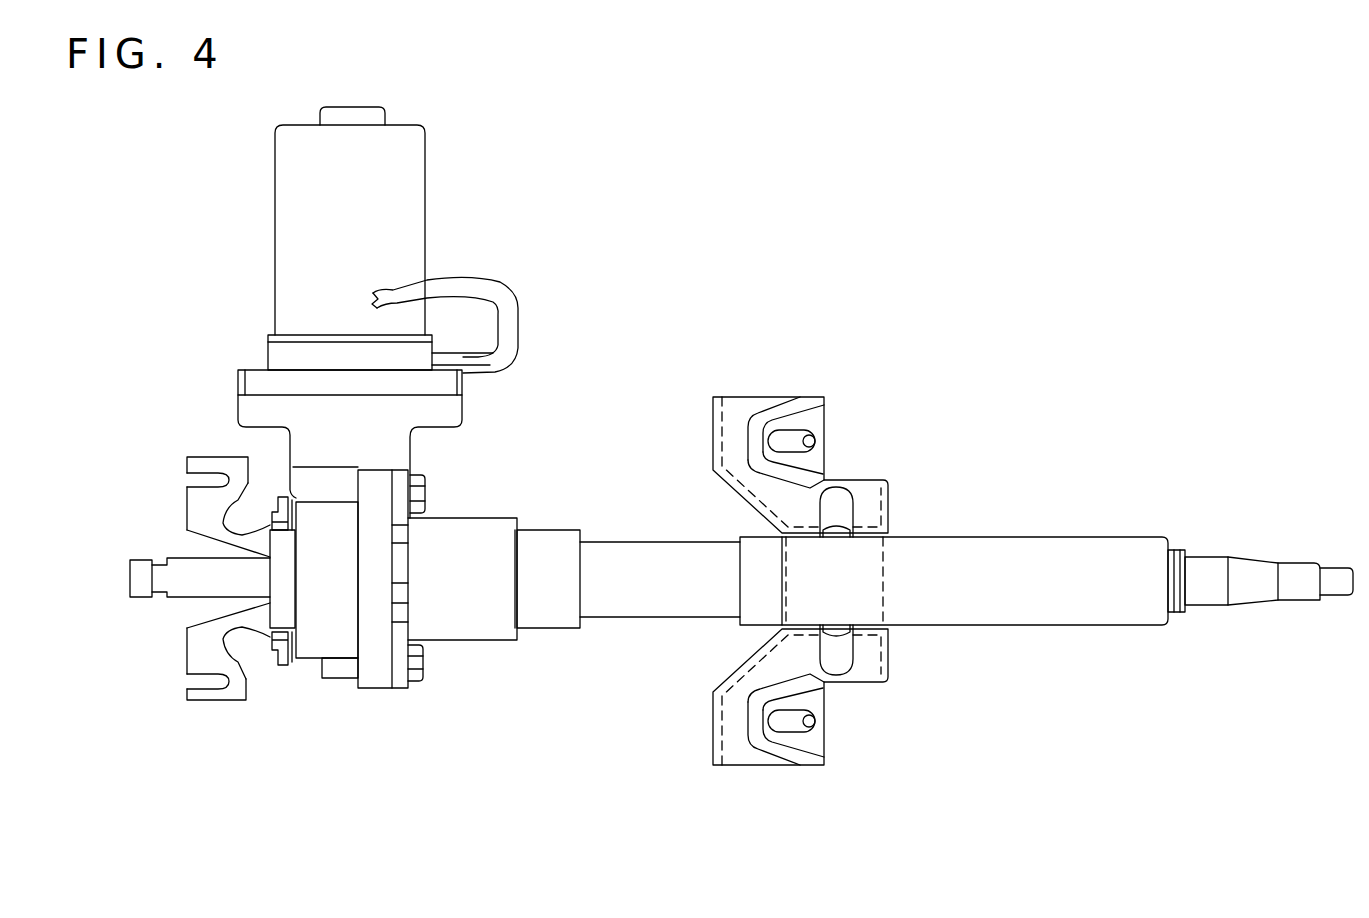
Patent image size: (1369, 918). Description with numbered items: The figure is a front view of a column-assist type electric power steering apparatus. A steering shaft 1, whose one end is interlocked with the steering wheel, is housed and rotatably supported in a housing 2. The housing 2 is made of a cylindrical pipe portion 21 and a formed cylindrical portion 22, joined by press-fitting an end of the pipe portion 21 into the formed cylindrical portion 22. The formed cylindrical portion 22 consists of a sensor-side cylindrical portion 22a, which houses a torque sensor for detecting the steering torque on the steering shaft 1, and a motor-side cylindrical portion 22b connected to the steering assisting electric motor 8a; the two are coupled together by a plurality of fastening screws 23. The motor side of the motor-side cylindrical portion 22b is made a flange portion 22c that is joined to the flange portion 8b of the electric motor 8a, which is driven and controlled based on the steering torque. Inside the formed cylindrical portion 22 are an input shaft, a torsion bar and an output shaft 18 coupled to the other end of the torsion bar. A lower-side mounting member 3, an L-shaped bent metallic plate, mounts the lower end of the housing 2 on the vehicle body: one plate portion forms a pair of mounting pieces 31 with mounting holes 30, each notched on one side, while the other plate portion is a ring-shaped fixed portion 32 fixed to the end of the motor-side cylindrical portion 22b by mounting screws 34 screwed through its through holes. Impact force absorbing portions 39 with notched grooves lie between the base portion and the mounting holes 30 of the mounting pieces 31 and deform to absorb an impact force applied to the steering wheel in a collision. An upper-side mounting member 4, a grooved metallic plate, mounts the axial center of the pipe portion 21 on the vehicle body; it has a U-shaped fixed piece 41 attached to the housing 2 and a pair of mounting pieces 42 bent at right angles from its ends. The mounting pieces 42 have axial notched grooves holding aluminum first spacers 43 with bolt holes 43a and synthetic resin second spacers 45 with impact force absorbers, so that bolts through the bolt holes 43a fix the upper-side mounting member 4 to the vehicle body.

The steering shaft 1 is at (1210, 598).
The housing 2 is at (641, 538).
The lower-side mounting member 3 is at (183, 579).
The upper-side mounting member 4 is at (788, 576).
The steering assisting electric motor 8a is at (415, 232).
The flange portion of the electric motor 8b is at (257, 373).
The output shaft 18 is at (140, 578).
The cylindrical pipe portion 21 is at (1103, 537).
The formed cylindrical portion 22 is at (490, 517).
The sensor-side cylindrical portion 22a is at (498, 630).
The motor-side cylindrical portion 22b is at (345, 610).
The flange portion 22c is at (455, 412).
The fastening screws 23 is at (425, 493).
The mounting holes 30 is at (198, 475).
The mounting pieces 31 is at (218, 453).
The ring-shaped fixed portion 32 is at (272, 637).
The mounting screws 34 is at (262, 690).
The impact force absorbing portions 39 is at (223, 533).
The U-shaped fixed piece 41 is at (880, 577).
The mounting pieces 42 is at (732, 402).
The first spacers 43 is at (818, 422).
The bolt holes 43a is at (812, 445).
The second spacers 45 is at (770, 413).